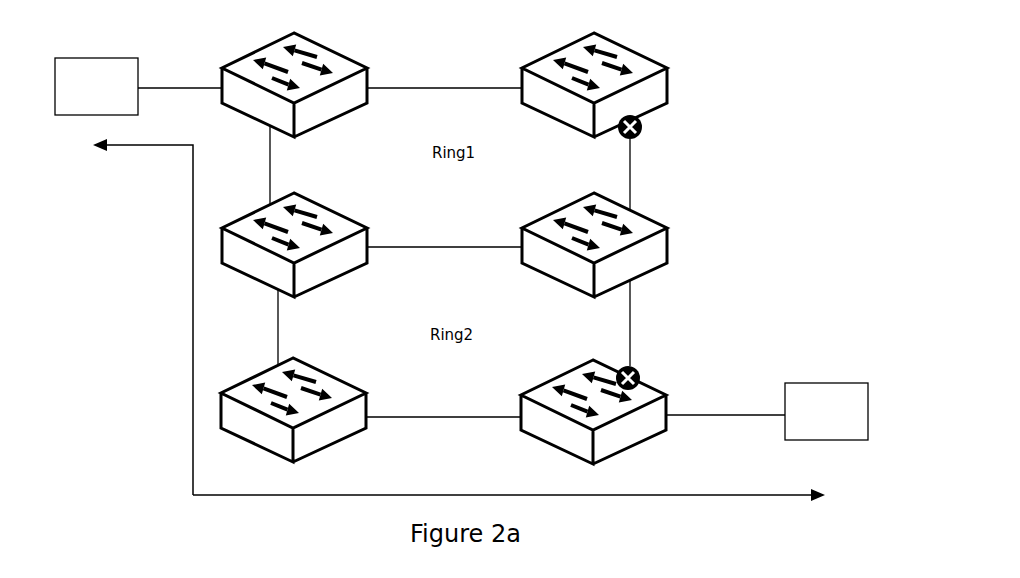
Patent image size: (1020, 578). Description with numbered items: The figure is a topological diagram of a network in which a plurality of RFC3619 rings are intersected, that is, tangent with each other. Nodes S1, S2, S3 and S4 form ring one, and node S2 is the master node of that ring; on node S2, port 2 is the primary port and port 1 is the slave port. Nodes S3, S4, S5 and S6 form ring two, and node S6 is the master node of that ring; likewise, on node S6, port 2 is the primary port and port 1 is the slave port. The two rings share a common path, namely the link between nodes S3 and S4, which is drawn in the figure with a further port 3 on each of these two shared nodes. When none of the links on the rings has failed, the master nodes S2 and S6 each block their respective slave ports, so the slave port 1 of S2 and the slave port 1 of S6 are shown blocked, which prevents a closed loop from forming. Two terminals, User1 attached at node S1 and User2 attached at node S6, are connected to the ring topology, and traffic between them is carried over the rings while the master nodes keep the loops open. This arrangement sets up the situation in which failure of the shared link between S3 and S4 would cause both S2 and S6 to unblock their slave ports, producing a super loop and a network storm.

The node S1 is at (319, 74).
The master node S2 is at (624, 85).
The node S3 is at (315, 249).
The node S4 is at (633, 255).
The node S5 is at (313, 420).
The master node S6 is at (622, 419).
The port 1 is at (464, 214).
The port 2 is at (467, 242).
The port 3 and link 3 is at (454, 323).
The user terminal 1 User1 is at (138, 86).
The user terminal 2 User2 is at (767, 411).